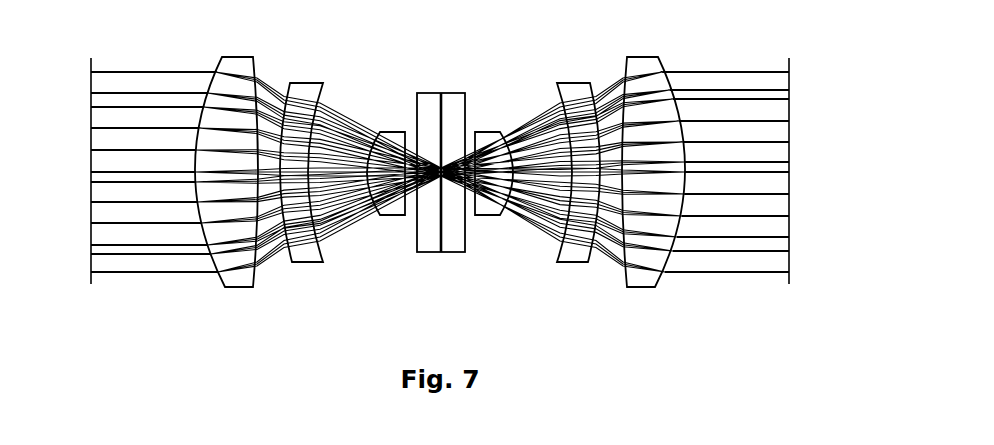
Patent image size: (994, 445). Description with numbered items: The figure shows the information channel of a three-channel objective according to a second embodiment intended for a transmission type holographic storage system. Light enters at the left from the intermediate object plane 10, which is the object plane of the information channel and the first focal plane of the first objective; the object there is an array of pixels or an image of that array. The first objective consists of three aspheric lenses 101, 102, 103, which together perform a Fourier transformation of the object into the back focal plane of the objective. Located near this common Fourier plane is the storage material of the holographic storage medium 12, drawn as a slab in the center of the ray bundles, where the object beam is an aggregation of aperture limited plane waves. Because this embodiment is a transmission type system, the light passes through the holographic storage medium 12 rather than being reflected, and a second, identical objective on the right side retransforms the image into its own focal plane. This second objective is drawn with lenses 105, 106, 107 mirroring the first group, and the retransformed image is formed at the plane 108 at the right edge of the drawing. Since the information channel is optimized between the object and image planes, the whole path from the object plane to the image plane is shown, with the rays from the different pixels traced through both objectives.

The intermediate object plane 10 is at (93, 57).
The image plane / output field 108 is at (786, 61).
The holographic storage medium 12 is at (438, 93).
The first aspheric lens 101 is at (238, 288).
The second aspheric lens 102 is at (302, 266).
The third aspheric lens 103 is at (393, 218).
The fifth lens 105 is at (487, 218).
The sixth lens 106 is at (572, 266).
The seventh lens 107 is at (642, 291).